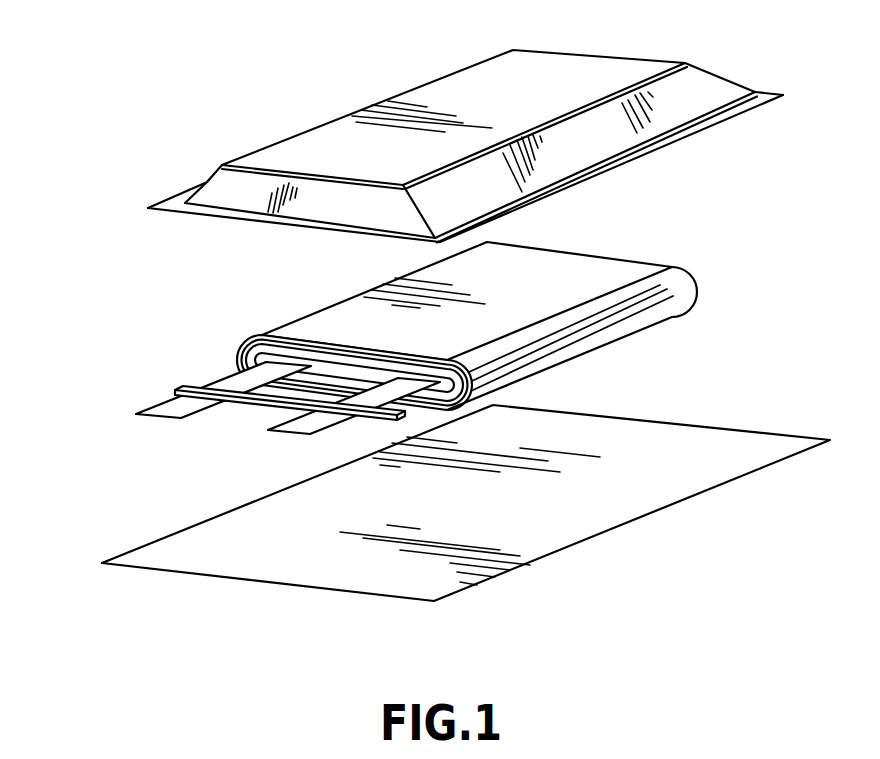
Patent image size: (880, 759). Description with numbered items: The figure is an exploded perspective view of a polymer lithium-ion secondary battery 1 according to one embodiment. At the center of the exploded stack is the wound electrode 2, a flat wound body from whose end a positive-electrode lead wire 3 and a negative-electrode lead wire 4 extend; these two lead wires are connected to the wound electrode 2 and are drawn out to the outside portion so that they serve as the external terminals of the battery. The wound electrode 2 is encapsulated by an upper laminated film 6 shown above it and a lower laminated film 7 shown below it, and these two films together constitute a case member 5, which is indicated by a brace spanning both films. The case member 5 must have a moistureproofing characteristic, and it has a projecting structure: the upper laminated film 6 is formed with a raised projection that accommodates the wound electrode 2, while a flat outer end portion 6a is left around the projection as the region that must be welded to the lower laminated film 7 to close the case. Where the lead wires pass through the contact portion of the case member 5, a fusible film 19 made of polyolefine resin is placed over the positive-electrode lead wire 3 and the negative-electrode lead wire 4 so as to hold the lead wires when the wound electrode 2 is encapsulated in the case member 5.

The polymer lithium-ion secondary battery 1 is at (707, 31).
The wound electrode 2 is at (681, 313).
The positive-electrode lead wire 3 is at (168, 417).
The negative-electrode lead wire 4 is at (282, 428).
The case member 5 is at (58, 263).
The upper laminated film 6 is at (424, 169).
The outer end portion 6a is at (713, 124).
The lower laminated film 7 is at (143, 553).
The fusible film 19 is at (210, 379).